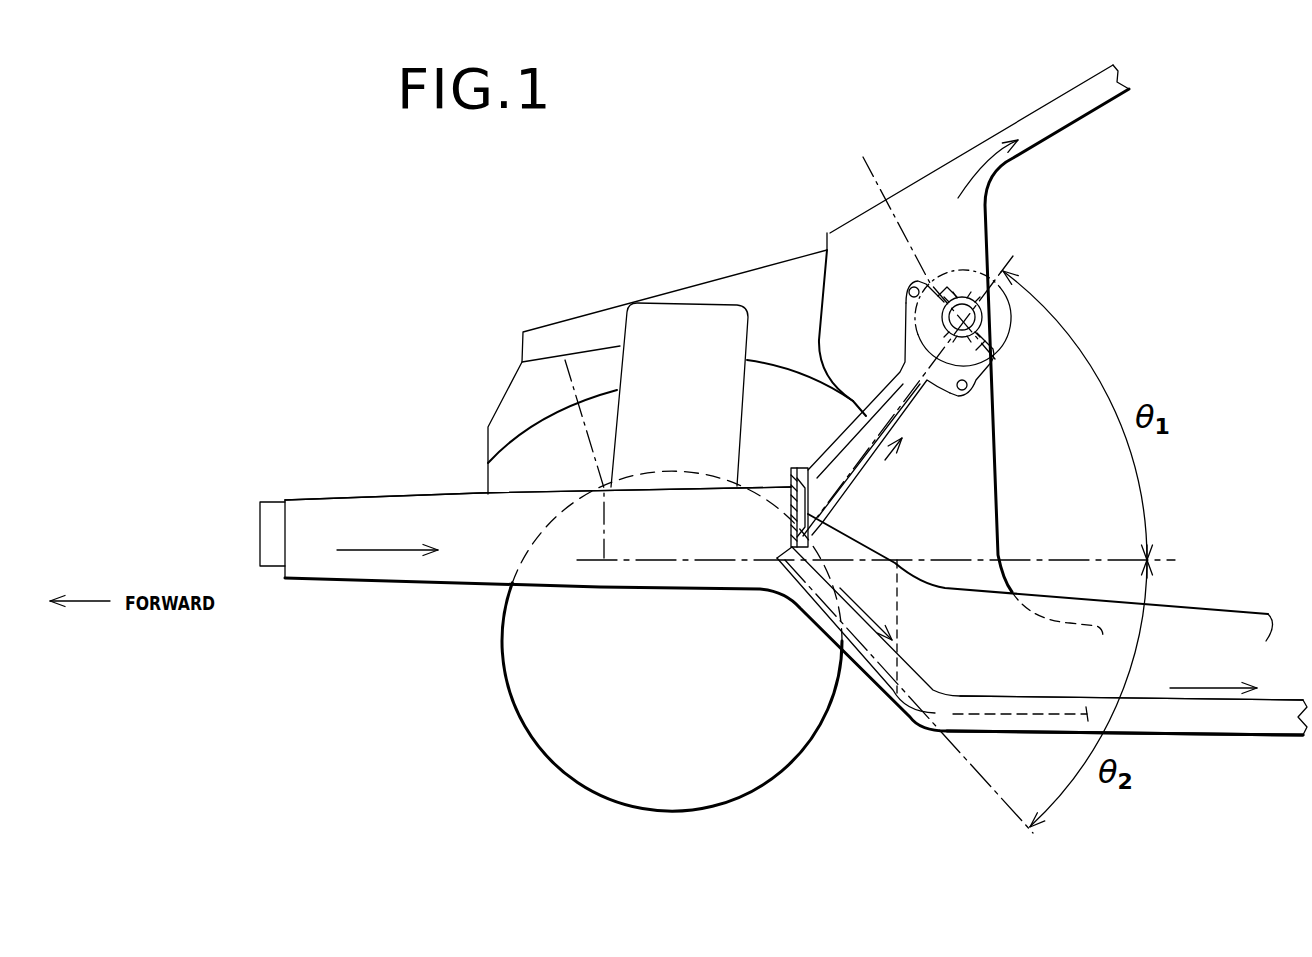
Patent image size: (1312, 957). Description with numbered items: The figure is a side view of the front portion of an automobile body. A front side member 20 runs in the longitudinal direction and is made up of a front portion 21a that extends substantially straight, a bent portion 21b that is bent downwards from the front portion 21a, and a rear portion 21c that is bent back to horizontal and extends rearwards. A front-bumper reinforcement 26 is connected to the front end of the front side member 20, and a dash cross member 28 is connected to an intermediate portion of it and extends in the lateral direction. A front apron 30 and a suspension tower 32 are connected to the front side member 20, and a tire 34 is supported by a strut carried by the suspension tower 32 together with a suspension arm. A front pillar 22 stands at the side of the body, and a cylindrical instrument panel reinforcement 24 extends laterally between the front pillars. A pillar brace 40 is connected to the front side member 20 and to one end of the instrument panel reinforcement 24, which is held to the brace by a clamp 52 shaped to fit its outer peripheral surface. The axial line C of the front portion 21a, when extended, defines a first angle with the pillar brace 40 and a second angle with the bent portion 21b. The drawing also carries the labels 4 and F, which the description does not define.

The front side member 20 is at (438, 478).
The front portion 21a is at (395, 525).
The bent portion 21b is at (803, 605).
The rear portion 21c is at (1220, 720).
The front pillar 22 is at (1048, 114).
The instrument panel reinforcement 24 is at (967, 290).
The front-bumper reinforcement 26 is at (260, 515).
The dash cross member 28 is at (788, 487).
The front apron 30 is at (503, 392).
The suspension tower 32 is at (673, 355).
The tire 34 is at (505, 690).
The pillar brace 40 is at (890, 382).
The pivot axis 4 is at (863, 157).
The clamp 52 is at (983, 317).
The impact load F is at (368, 550).
The axial line C is at (565, 360).